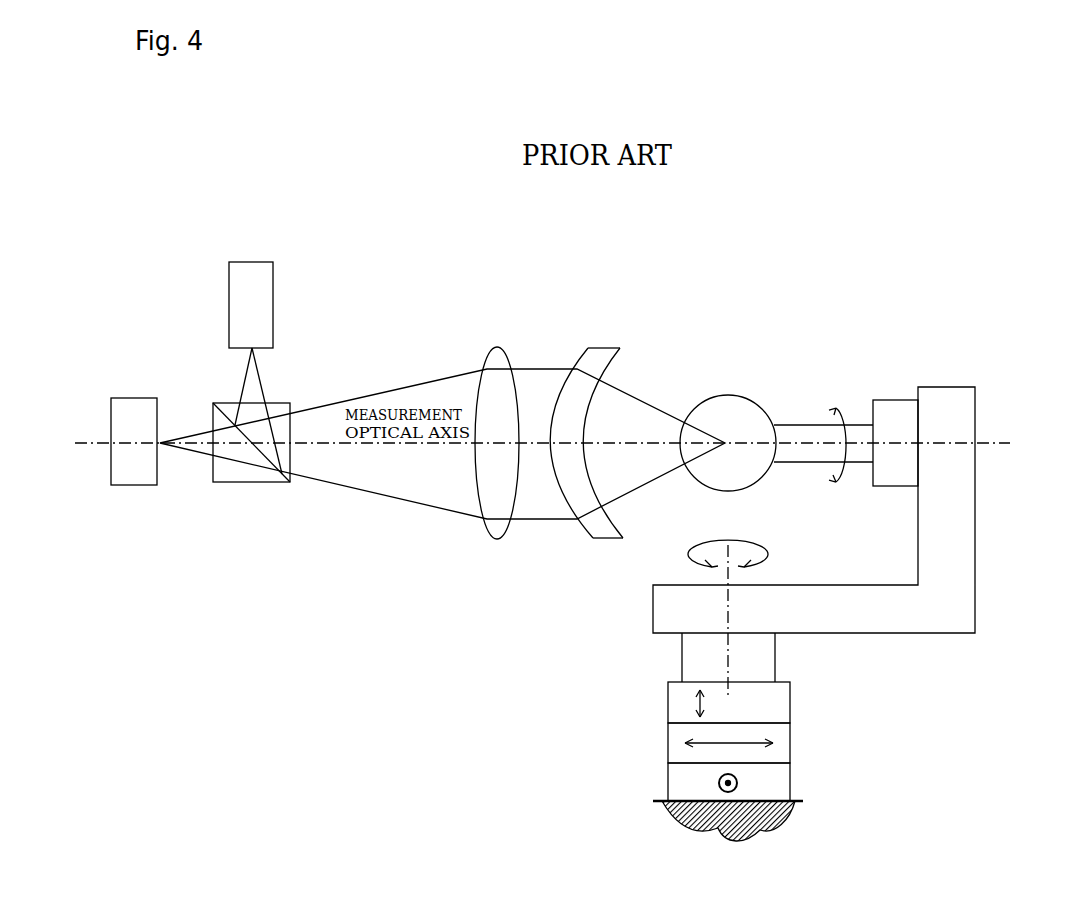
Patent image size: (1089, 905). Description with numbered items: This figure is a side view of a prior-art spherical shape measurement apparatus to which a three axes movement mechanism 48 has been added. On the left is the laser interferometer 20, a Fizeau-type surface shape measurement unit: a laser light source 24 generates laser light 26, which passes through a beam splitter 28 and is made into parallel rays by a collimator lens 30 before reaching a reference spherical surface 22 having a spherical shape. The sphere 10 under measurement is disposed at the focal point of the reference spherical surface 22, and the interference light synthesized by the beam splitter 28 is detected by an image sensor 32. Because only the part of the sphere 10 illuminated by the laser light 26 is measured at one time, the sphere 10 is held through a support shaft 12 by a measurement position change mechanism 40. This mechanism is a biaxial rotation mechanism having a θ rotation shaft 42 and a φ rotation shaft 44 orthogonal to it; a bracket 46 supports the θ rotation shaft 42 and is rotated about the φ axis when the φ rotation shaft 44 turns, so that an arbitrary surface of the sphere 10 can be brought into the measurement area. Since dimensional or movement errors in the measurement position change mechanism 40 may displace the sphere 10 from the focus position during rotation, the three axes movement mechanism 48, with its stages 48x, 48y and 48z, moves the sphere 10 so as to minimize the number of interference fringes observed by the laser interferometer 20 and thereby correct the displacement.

The sphere 10 is at (712, 397).
The support shaft 12 is at (792, 425).
The laser interferometer 20 is at (160, 257).
The reference spherical surface 22 is at (607, 538).
The laser light source 24 is at (273, 297).
The laser light 26 is at (352, 400).
The beam splitter 28 is at (232, 482).
The collimator lens 30 is at (490, 535).
The image sensor 32 is at (110, 423).
The measurement position change mechanism 40 is at (976, 285).
The θ rotation shaft 42 is at (892, 400).
The φ rotation shaft 44 is at (775, 655).
The bracket 46 is at (975, 564).
The three axes movement mechanism 48 is at (545, 673).
The z stage 48z is at (668, 704).
The y stage 48y is at (668, 743).
The x stage 48x is at (668, 781).